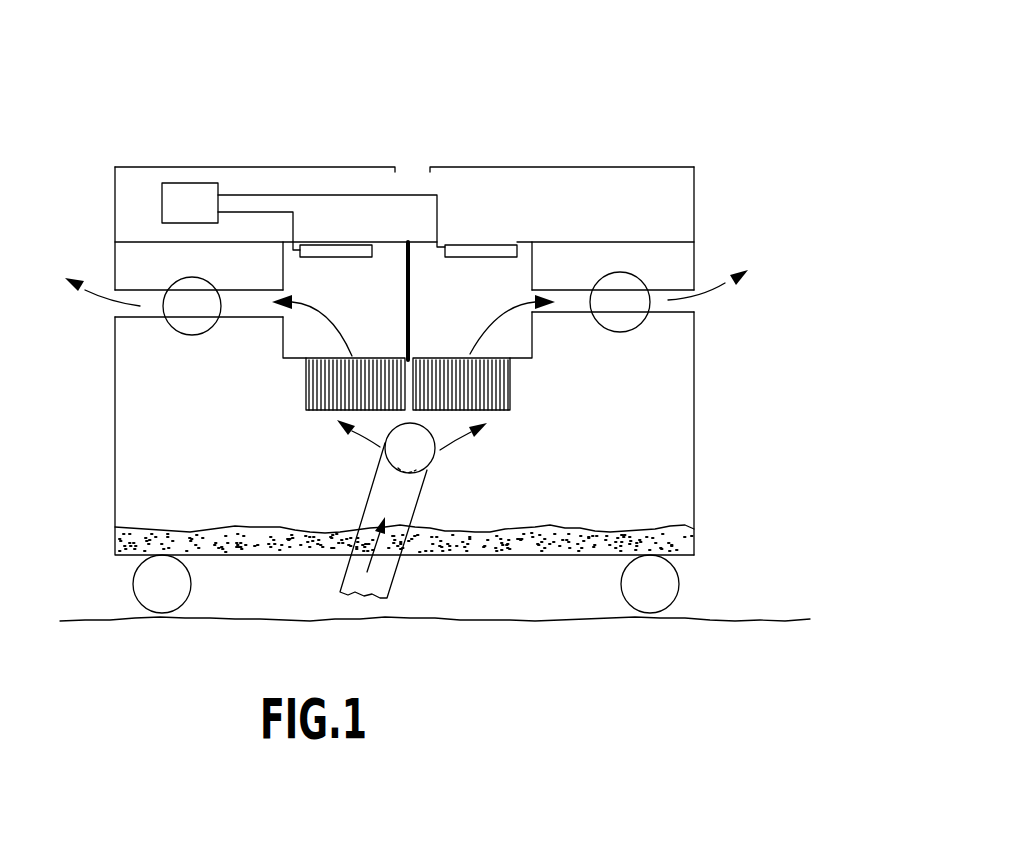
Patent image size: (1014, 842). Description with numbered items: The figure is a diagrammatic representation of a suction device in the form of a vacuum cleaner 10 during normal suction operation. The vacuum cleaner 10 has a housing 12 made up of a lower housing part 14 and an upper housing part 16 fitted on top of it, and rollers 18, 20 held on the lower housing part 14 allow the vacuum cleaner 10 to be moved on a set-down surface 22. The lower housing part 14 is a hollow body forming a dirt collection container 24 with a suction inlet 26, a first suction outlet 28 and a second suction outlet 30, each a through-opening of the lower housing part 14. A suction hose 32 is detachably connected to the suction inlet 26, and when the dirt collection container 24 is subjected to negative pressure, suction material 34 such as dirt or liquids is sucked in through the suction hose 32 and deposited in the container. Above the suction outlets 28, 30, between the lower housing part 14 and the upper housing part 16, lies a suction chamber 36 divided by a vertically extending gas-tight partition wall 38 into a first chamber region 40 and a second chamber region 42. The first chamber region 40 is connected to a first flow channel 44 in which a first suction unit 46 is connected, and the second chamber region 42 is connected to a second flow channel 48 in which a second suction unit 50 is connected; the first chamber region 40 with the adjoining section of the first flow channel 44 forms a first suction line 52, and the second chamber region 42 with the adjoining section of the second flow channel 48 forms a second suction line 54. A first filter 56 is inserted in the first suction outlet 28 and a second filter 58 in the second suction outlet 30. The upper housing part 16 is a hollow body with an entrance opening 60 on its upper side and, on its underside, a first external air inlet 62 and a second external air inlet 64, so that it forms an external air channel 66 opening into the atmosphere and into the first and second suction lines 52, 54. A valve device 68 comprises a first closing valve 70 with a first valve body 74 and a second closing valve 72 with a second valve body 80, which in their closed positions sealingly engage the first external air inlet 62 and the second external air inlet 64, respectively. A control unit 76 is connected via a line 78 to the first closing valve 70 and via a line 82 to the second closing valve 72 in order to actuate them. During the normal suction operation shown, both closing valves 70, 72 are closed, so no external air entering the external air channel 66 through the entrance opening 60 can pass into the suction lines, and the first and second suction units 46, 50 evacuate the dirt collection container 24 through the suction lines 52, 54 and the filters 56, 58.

The vacuum cleaner 10 is at (685, 90).
The housing 12 is at (700, 440).
The lower housing part 14 is at (695, 382).
The upper housing part 16 is at (694, 205).
The roller 18 is at (168, 598).
The roller 20 is at (648, 605).
The set-down surface 22 is at (722, 618).
The dirt collection container 24 is at (673, 502).
The suction inlet 26 is at (427, 467).
The first suction outlet 28 is at (303, 356).
The second suction outlet 30 is at (510, 360).
The suction hose 32 is at (397, 573).
The suction material 34 is at (493, 545).
The suction chamber 36 is at (420, 257).
The partition wall 38 is at (403, 257).
The first chamber region 40 is at (390, 342).
The second chamber region 42 is at (457, 342).
The first flow channel 44 is at (254, 303).
The first suction unit 46 is at (181, 300).
The second flow channel 48 is at (578, 303).
The second suction unit 50 is at (627, 292).
The first suction line 52 is at (300, 330).
The second suction line 54 is at (517, 325).
The first filter 56 is at (320, 388).
The second filter 58 is at (500, 390).
The entrance opening 60 is at (394, 166).
The first external air inlet 62 is at (314, 240).
The second external air inlet 64 is at (500, 242).
The external air channel 66 is at (595, 197).
The valve device 68 is at (330, 240).
The first closing valve 70 is at (348, 240).
The second closing valve 72 is at (478, 240).
The first valve body 74 is at (362, 257).
The control unit 76 is at (200, 217).
The line 78 is at (237, 212).
The second valve body 80 is at (466, 257).
The line 82 is at (250, 195).